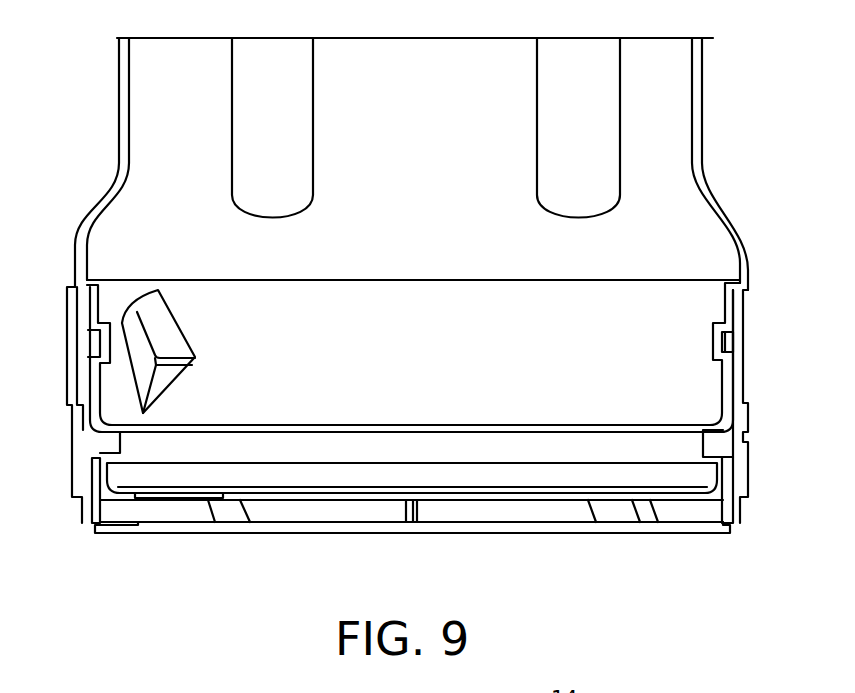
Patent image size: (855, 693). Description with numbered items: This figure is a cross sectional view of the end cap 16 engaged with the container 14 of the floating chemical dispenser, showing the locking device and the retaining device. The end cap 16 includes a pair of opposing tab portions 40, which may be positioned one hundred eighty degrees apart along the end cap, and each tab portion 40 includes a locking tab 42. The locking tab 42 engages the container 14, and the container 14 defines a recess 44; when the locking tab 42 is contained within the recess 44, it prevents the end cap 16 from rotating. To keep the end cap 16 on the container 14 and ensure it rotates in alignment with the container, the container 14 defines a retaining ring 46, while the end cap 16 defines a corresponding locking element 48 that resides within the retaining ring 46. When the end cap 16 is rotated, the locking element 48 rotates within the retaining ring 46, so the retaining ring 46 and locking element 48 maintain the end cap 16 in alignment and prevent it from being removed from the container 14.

The container 14 is at (673, 120).
The end cap 16 is at (590, 540).
The tab portion 40 is at (82, 482).
The locking tab 42 is at (93, 343).
The recess 44 is at (725, 352).
The retaining ring 46 is at (365, 448).
The locking element 48 is at (92, 442).